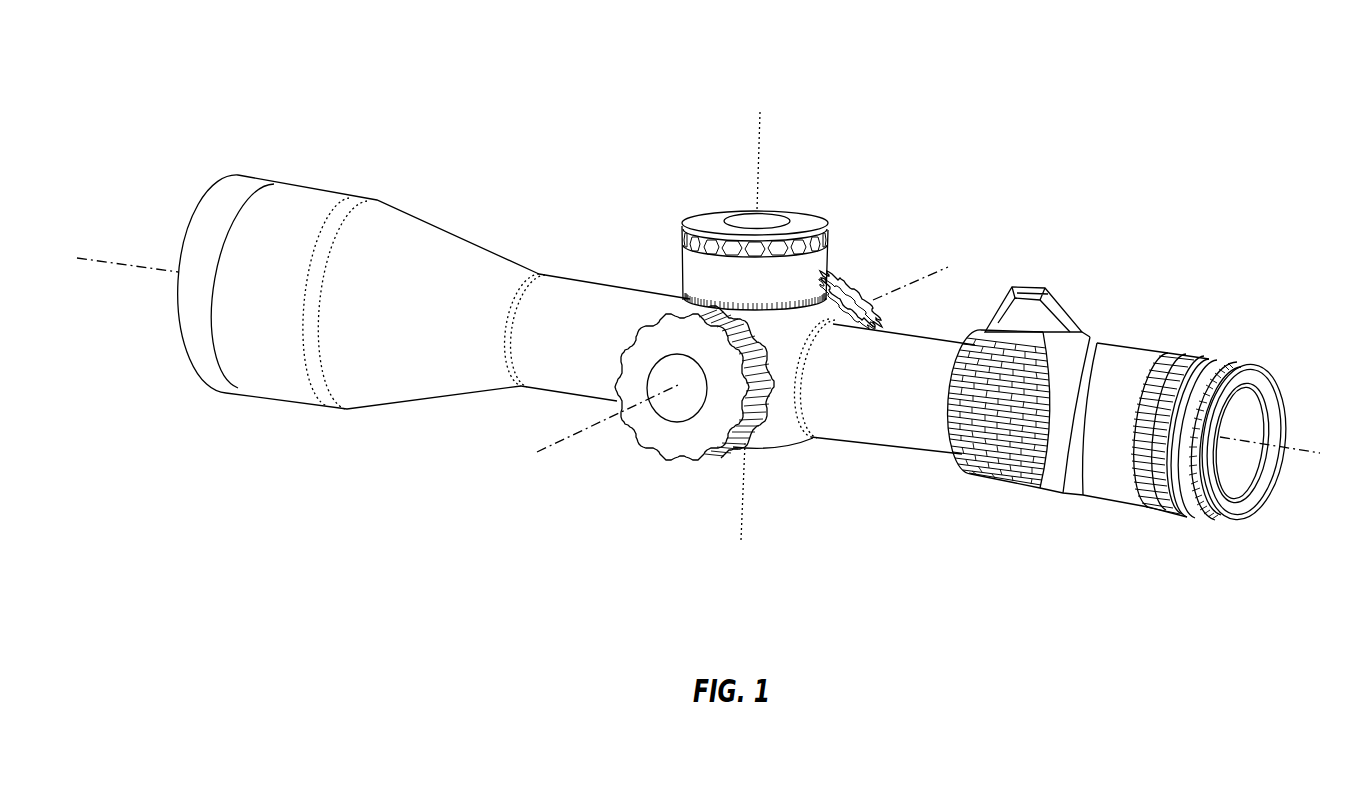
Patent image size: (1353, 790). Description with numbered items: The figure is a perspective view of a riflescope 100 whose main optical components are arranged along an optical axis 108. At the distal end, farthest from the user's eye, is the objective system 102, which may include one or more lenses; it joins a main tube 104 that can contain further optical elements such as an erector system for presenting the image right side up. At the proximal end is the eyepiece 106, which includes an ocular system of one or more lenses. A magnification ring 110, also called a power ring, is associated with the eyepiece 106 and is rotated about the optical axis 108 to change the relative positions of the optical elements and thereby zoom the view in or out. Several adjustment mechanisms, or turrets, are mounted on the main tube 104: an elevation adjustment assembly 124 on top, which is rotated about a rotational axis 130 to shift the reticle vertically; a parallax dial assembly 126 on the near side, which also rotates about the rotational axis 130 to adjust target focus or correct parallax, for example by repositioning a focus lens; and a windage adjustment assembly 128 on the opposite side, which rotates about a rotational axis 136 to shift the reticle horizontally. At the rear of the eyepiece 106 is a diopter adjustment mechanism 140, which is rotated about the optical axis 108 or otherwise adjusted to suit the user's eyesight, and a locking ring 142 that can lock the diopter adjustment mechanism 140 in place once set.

The riflescope 100 is at (970, 140).
The objective system 102 is at (347, 180).
The main tube 104 is at (585, 395).
The eyepiece 106 is at (1168, 333).
The optical axis 108 is at (88, 258).
The magnification ring 110 is at (1058, 277).
The elevation adjustment assembly 124 is at (712, 186).
The parallax dial assembly 126 is at (662, 468).
The windage adjustment assembly 128 is at (847, 270).
The rotational axis 130 is at (762, 153).
The rotational axis 136 is at (565, 440).
The diopter adjustment mechanism 140 is at (1267, 363).
The locking ring 142 is at (1202, 355).